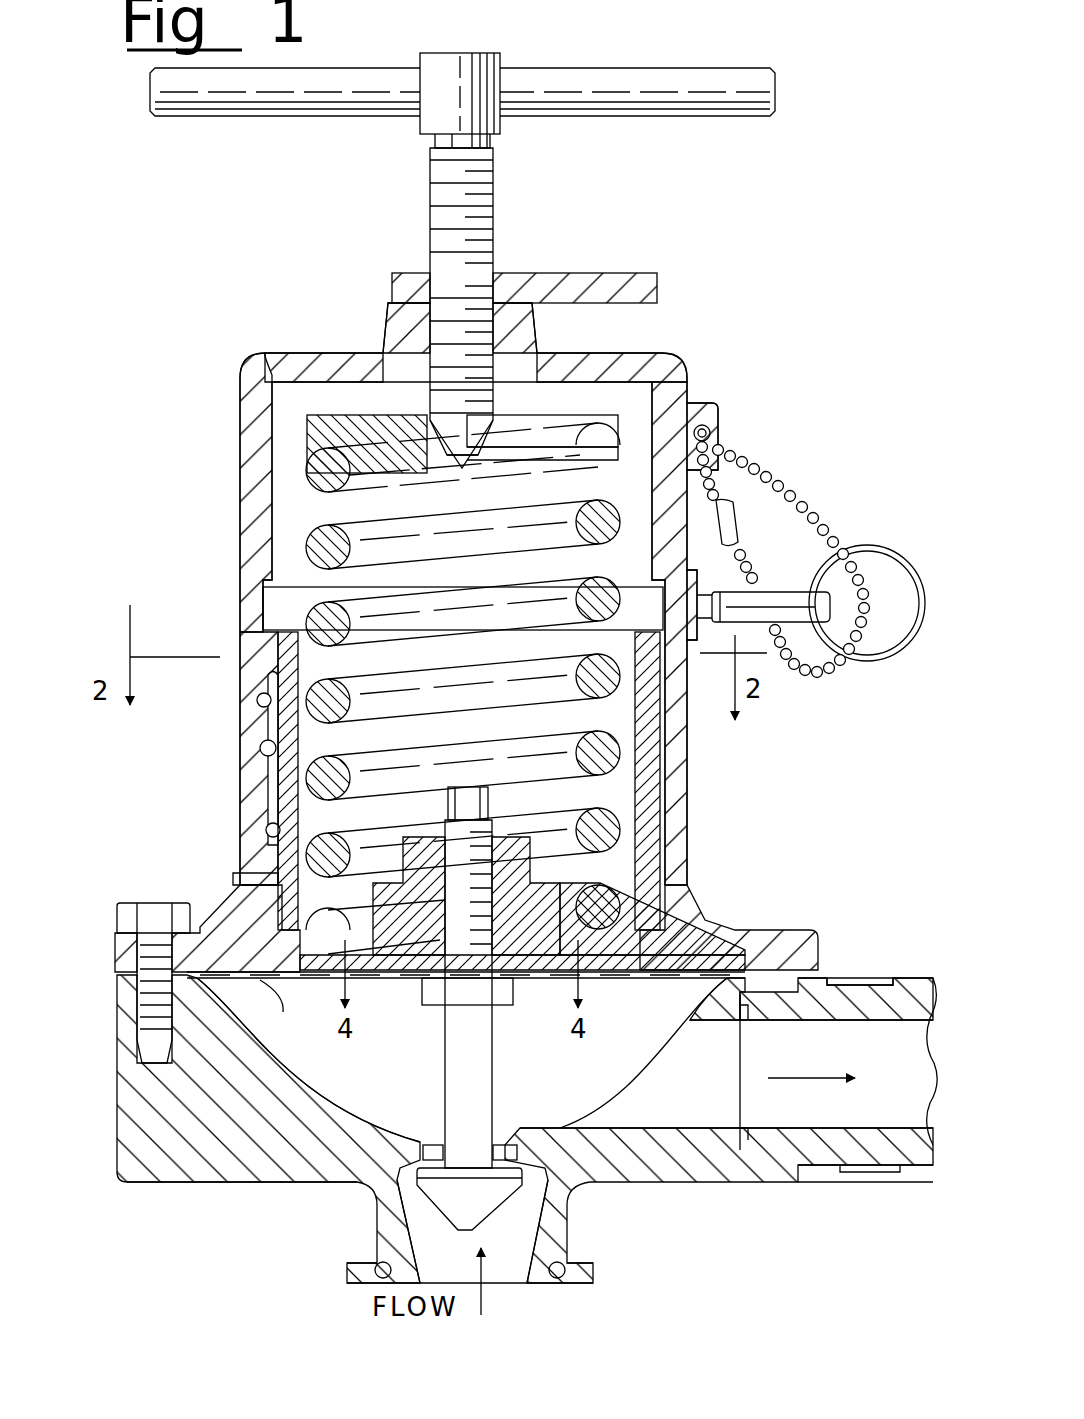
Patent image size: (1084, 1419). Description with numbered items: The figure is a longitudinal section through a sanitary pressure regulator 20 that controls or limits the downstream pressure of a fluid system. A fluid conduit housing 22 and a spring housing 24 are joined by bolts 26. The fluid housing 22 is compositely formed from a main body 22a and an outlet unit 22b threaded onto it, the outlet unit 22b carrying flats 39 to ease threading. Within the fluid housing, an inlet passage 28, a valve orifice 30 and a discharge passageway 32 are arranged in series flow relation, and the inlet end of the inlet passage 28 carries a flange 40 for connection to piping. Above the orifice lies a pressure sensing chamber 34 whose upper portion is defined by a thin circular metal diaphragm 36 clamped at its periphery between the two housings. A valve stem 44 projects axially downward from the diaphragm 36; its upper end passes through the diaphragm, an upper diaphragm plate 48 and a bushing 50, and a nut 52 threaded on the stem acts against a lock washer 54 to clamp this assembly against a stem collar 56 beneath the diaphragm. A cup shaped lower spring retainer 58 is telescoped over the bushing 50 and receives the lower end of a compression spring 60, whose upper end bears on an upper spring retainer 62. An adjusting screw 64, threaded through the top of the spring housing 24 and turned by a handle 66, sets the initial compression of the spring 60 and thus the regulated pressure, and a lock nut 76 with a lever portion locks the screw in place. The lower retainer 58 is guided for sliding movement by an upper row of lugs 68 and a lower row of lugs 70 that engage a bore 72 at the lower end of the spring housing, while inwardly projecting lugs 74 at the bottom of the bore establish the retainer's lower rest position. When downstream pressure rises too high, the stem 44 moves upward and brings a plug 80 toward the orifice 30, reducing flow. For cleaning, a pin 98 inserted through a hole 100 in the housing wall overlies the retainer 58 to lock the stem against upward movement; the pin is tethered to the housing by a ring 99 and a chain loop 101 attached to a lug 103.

The pressure regulator 20 is at (797, 320).
The fluid conduit housing 22 is at (110, 1178).
The main body 22a is at (200, 1183).
The outlet unit 22b is at (892, 1166).
The spring housing 24 is at (240, 440).
The bolts 26 is at (122, 906).
The inlet passage 28 is at (512, 1280).
The valve orifice 30 is at (500, 1143).
The discharge passageway 32 is at (638, 1135).
The pressure sensing chamber 34 is at (462, 1060).
The diaphragm 36 is at (279, 1008).
The flats 39 is at (866, 990).
The flange 40 is at (580, 1265).
The valve stem 44 is at (494, 1050).
The upper diaphragm plate 48 is at (662, 978).
The bushing 50 is at (565, 892).
The nut 52 is at (490, 800).
The lock washer 54 is at (532, 858).
The stem collar 56 is at (422, 996).
The lower spring retainer 58 is at (668, 735).
The compression spring 60 is at (243, 522).
The upper spring retainer 62 is at (660, 385).
The adjusting screw 64 is at (494, 182).
The handle 66 is at (672, 68).
The upper row of lugs 68 is at (262, 706).
The lower row of lugs 70 is at (267, 827).
The bore 72 is at (262, 752).
The lugs 74 is at (245, 880).
The lock nut 76 is at (580, 273).
The plug 80 is at (445, 1222).
The pin 98 is at (795, 680).
The ring 99 is at (880, 556).
The hole 100 is at (752, 590).
The chain loop 101 is at (790, 500).
The lug 103 is at (714, 405).